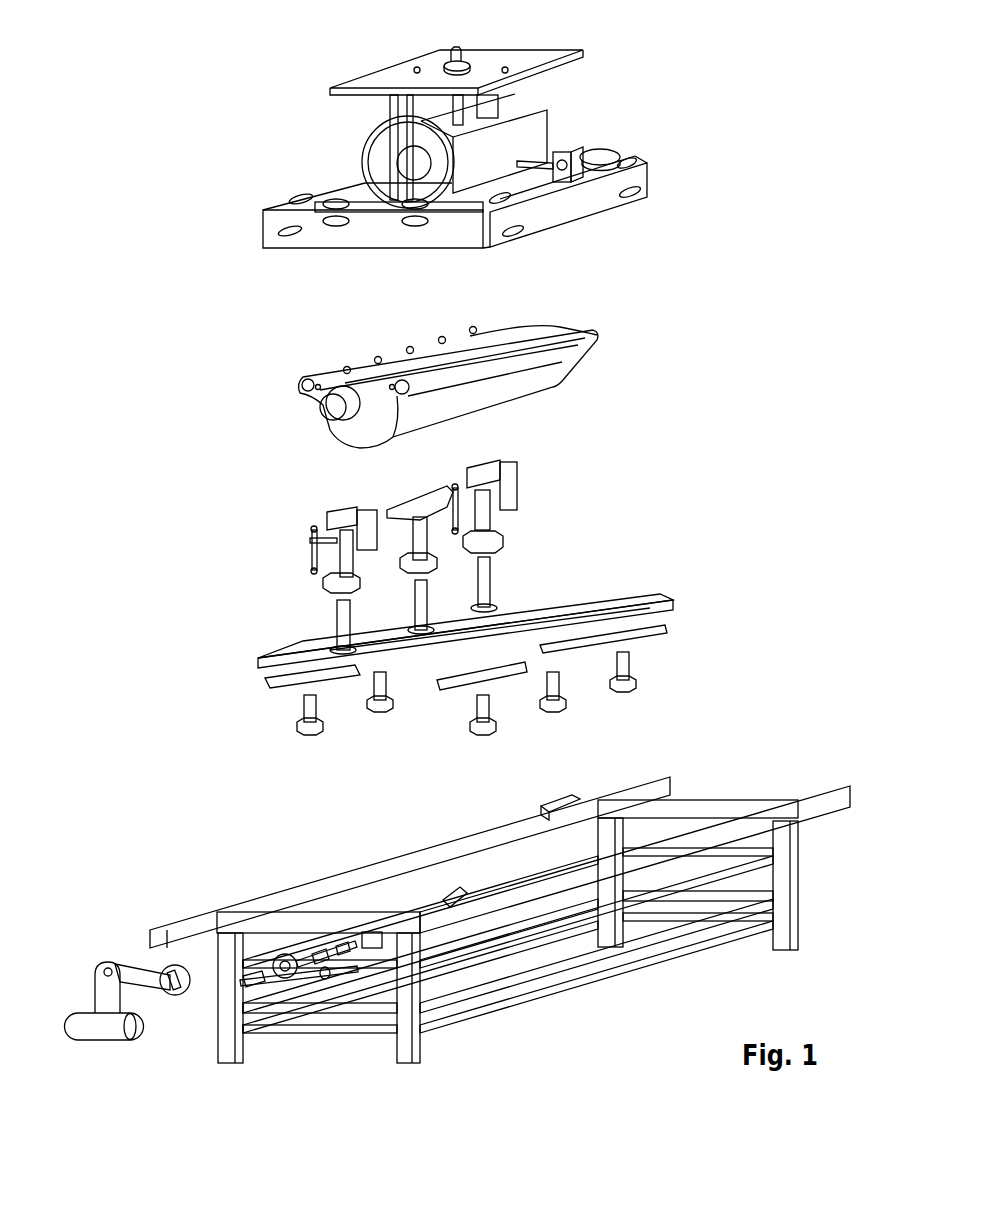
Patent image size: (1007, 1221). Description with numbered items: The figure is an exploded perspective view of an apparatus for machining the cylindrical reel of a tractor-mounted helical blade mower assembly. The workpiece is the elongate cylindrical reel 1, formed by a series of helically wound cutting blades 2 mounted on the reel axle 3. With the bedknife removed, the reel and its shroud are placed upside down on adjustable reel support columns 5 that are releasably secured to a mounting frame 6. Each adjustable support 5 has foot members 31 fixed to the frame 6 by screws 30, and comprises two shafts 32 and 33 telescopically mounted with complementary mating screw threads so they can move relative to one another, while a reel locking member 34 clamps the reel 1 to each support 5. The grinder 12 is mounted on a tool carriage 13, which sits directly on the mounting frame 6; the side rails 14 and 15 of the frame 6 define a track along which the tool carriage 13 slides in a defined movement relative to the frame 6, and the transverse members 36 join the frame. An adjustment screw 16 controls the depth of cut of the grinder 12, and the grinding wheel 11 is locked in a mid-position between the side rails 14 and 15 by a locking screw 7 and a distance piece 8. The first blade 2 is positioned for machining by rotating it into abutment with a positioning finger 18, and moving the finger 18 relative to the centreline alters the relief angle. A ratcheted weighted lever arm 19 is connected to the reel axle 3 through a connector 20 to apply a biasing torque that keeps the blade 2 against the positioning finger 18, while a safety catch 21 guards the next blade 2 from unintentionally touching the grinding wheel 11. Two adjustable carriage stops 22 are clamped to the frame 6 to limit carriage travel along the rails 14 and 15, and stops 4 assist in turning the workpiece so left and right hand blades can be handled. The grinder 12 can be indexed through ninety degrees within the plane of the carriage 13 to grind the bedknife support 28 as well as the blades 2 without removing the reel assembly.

The cylindrical reel 1 is at (297, 388).
The cutting blades 2 is at (402, 345).
The reel axle 3 is at (320, 408).
The stops 4 is at (342, 978).
The adjustable reel support columns 5 is at (417, 522).
The mounting frame 6 is at (580, 967).
The locking screw 7 is at (578, 158).
The distance piece 8 is at (537, 160).
The grinding wheel 11 is at (375, 160).
The grinder 12 is at (380, 130).
The tool carriage 13 is at (340, 193).
The side rail 14 is at (448, 848).
The side rail 15 is at (757, 830).
The adjustment screw 16 is at (462, 56).
The positioning finger 18 is at (393, 227).
The ratcheted weighted lever arm 19 is at (140, 957).
The connector 20 is at (350, 943).
The safety catch 21 is at (443, 213).
The adjustable carriage stops 22 is at (450, 893).
The bedknife support 28 is at (487, 327).
The screws 30 is at (637, 680).
The foot members 31 is at (670, 607).
The shaft 32 is at (337, 617).
The shaft 33 is at (487, 518).
The reel locking member 34 is at (312, 555).
The transverse members 36 is at (247, 923).